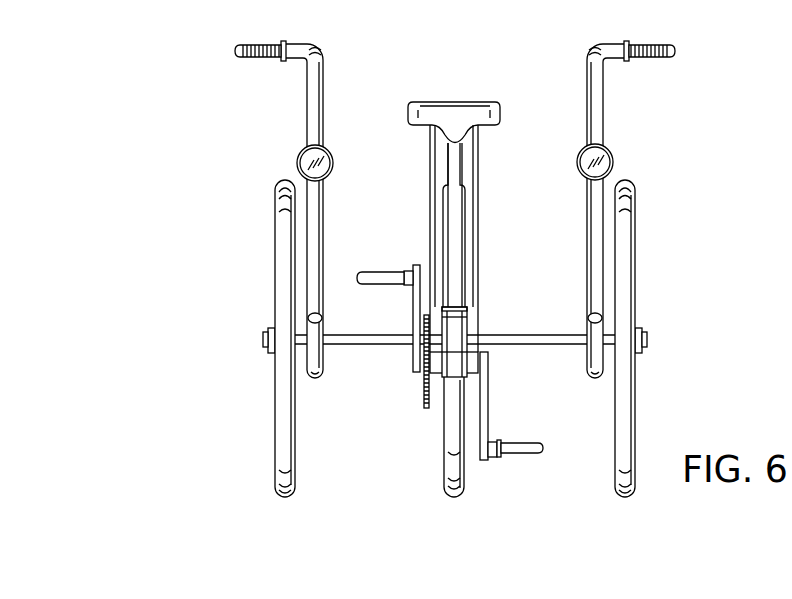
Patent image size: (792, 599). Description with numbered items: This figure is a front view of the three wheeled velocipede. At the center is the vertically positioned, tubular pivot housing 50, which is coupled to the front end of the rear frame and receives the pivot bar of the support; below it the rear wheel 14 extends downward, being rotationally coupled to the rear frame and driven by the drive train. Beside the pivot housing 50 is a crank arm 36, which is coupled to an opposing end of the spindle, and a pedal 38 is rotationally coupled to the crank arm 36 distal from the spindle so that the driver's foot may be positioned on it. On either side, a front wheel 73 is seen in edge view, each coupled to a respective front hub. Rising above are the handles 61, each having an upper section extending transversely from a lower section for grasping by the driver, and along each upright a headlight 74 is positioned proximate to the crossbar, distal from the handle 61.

The handle 61 is at (258, 58).
The headlight 74 is at (615, 150).
The front wheel 73 is at (634, 250).
The pedal 38 is at (378, 267).
The pivot housing 50 is at (456, 379).
The crank arm 36 is at (495, 413).
The rear wheel 14 is at (469, 475).